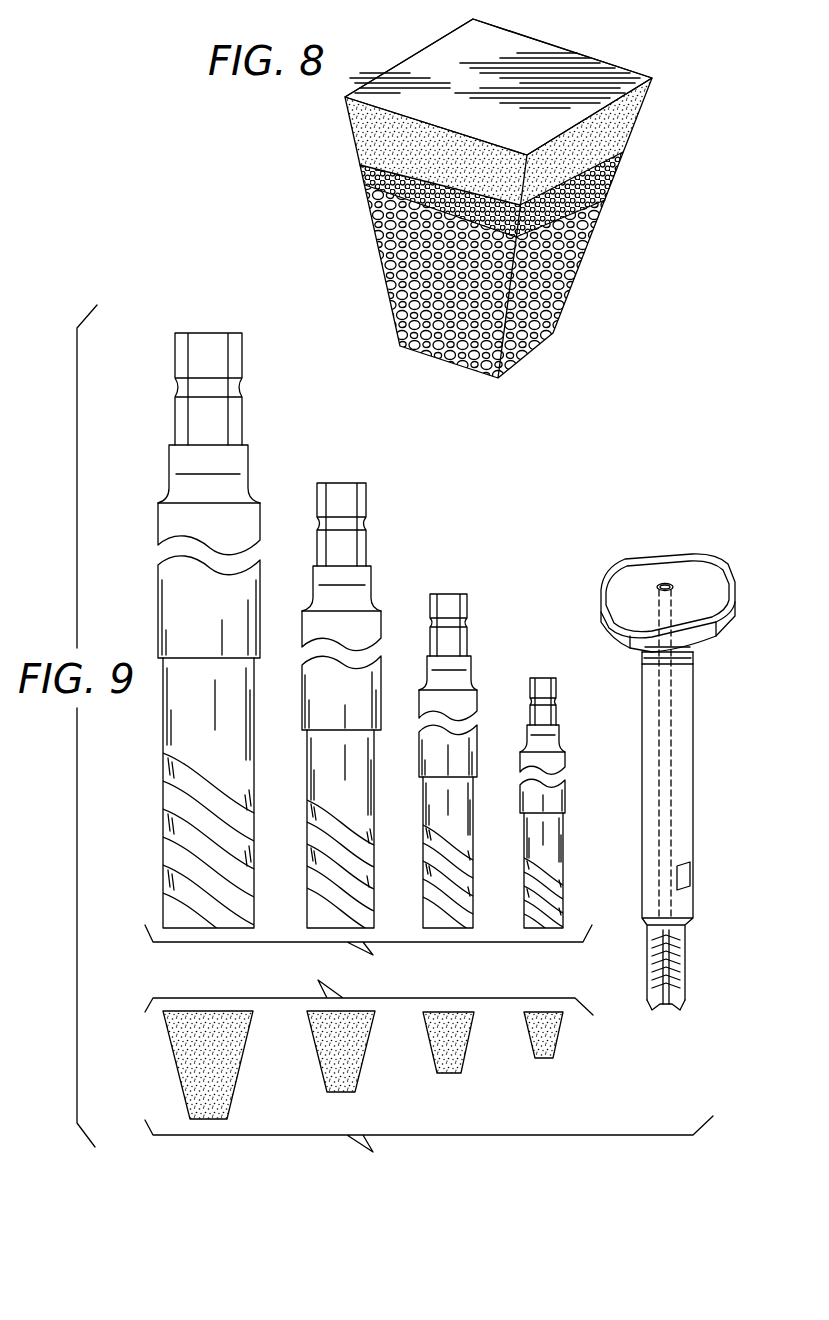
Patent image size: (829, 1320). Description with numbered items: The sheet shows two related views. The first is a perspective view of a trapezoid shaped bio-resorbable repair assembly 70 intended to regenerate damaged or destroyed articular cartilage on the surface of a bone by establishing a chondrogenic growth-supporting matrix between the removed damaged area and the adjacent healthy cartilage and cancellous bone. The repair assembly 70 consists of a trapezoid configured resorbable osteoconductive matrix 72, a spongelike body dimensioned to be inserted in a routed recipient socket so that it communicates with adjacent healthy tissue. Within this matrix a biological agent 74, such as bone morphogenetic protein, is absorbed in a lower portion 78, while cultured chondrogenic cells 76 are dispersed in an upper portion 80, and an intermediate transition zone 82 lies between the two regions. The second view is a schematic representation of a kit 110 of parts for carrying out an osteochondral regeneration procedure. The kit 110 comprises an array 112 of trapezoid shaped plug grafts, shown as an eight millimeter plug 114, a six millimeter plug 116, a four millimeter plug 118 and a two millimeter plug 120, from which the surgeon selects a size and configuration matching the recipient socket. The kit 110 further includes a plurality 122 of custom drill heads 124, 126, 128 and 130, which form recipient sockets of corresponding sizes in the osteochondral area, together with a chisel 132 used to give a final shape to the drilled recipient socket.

In FIG. 8, the repair assembly 70 is at (606, 215).
In FIG. 8, the resorbable osteoconductive matrix 72 is at (348, 123).
In FIG. 8, the biological agent 74 is at (504, 176).
In FIG. 8, the cultured chondrogenic cells 76 is at (545, 307).
In FIG. 8, the lower portion 78 is at (583, 262).
In FIG. 8, the upper portion 80 is at (640, 112).
In FIG. 8, the intermediate transition zone 82 is at (626, 150).
In FIG. 9, the kit 110 is at (395, 743).
In FIG. 9, the array of trapezoid shaped plug grafts 112 is at (346, 1037).
In FIG. 9, the 8 mm plug 114 is at (180, 1066).
In FIG. 9, the 6 mm plug 116 is at (325, 1063).
In FIG. 9, the 4 mm plug 118 is at (437, 1052).
In FIG. 9, the 2 mm plug 120 is at (537, 1043).
In FIG. 9, the plurality of custom drill heads 122 is at (454, 671).
In FIG. 9, the custom drill head 124 is at (212, 431).
In FIG. 9, the custom drill head 126 is at (345, 552).
In FIG. 9, the custom drill head 128 is at (447, 645).
In FIG. 9, the custom drill head 130 is at (546, 717).
In FIG. 9, the chisel 132 is at (686, 740).